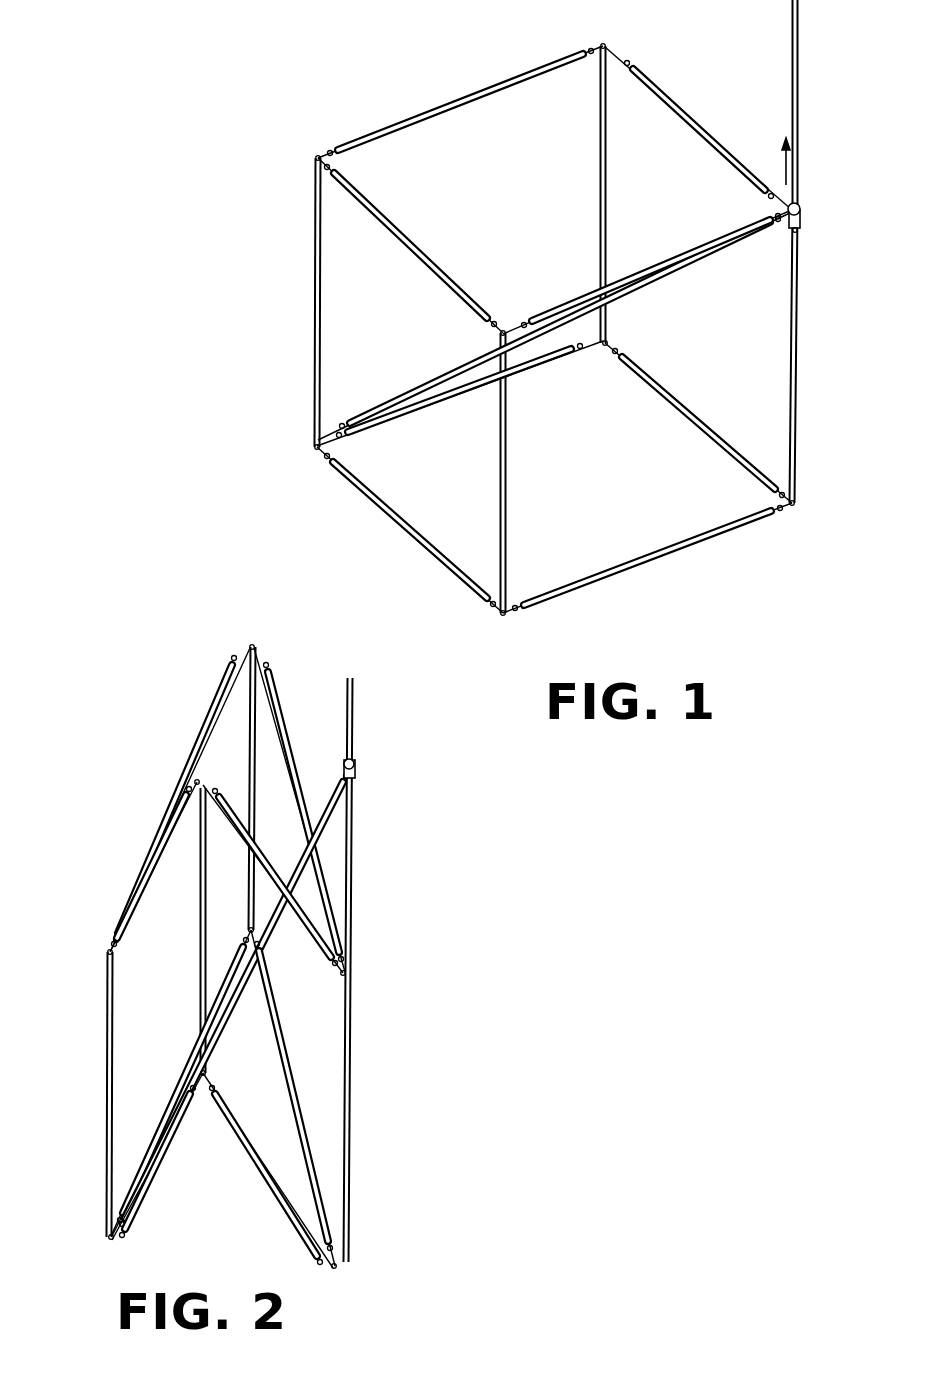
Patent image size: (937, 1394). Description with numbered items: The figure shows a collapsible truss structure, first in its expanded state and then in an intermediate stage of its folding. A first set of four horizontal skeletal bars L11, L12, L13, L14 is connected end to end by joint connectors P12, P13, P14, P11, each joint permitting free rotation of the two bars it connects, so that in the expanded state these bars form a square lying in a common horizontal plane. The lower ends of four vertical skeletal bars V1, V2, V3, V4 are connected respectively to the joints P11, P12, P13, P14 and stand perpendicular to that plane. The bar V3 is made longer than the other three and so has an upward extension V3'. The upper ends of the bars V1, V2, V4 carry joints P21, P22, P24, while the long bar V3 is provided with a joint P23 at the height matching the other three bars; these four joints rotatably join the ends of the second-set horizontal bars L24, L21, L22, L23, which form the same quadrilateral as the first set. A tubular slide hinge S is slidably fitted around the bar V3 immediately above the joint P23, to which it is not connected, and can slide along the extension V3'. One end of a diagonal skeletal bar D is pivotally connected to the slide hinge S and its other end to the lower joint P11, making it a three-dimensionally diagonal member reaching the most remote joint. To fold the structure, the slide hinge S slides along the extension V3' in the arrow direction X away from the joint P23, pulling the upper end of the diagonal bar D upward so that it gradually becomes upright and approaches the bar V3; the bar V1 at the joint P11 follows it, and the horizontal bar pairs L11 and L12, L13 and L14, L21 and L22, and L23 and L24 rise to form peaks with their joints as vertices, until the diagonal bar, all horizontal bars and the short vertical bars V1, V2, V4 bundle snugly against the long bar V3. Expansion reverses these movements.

In FIG. 1, the joint connector P11 is at (315, 449).
In FIG. 2, the joint connector P11 is at (109, 1239).
In FIG. 1, the joint connector P12 is at (503, 616).
In FIG. 2, the joint connector P12 is at (205, 1080).
In FIG. 1, the joint connector P13 is at (791, 508).
In FIG. 2, the joint connector P13 is at (338, 1267).
In FIG. 1, the joint connector P14 is at (610, 342).
In FIG. 2, the joint connector P14 is at (248, 930).
In FIG. 1, the joint P21 is at (316, 159).
In FIG. 2, the joint P21 is at (109, 950).
In FIG. 1, the joint P22 is at (504, 330).
In FIG. 2, the joint P22 is at (195, 780).
In FIG. 1, the joint P23 is at (797, 234).
In FIG. 2, the joint P23 is at (346, 973).
In FIG. 1, the joint P24 is at (606, 45).
In FIG. 2, the joint P24 is at (252, 645).
In FIG. 1, the horizontal skeletal bar L11 is at (398, 515).
In FIG. 2, the horizontal skeletal bar L11 is at (160, 1195).
In FIG. 1, the horizontal skeletal bar L12 is at (620, 563).
In FIG. 2, the horizontal skeletal bar L12 is at (266, 1187).
In FIG. 1, the horizontal skeletal bar L13 is at (690, 430).
In FIG. 2, the horizontal skeletal bar L13 is at (290, 1100).
In FIG. 1, the horizontal skeletal bar L14 is at (540, 362).
In FIG. 2, the horizontal skeletal bar L14 is at (160, 1125).
In FIG. 1, the horizontal skeletal bar L21 is at (428, 242).
In FIG. 2, the horizontal skeletal bar L21 is at (165, 868).
In FIG. 1, the horizontal skeletal bar L22 is at (670, 247).
In FIG. 2, the horizontal skeletal bar L22 is at (305, 935).
In FIG. 1, the horizontal skeletal bar L23 is at (688, 110).
In FIG. 2, the horizontal skeletal bar L23 is at (294, 742).
In FIG. 1, the horizontal skeletal bar L24 is at (432, 100).
In FIG. 2, the horizontal skeletal bar L24 is at (205, 728).
In FIG. 1, the vertical skeletal bar V1 is at (315, 308).
In FIG. 2, the vertical skeletal bar V1 is at (107, 1103).
In FIG. 1, the vertical skeletal bar V2 is at (506, 488).
In FIG. 2, the vertical skeletal bar V2 is at (200, 978).
In FIG. 1, the vertical skeletal bar V3 is at (823, 357).
In FIG. 2, the vertical skeletal bar V3 is at (377, 970).
In FIG. 1, the vertical skeletal bar V4 is at (600, 143).
In FIG. 2, the vertical skeletal bar V4 is at (257, 697).
In FIG. 1, the upward extension V3' is at (828, 102).
In FIG. 1, the diagonal skeletal bar D is at (456, 370).
In FIG. 2, the diagonal skeletal bar D is at (290, 852).
In FIG. 1, the slide hinge S is at (800, 207).
In FIG. 2, the slide hinge S is at (356, 765).
In FIG. 1, the arrow direction X is at (776, 154).